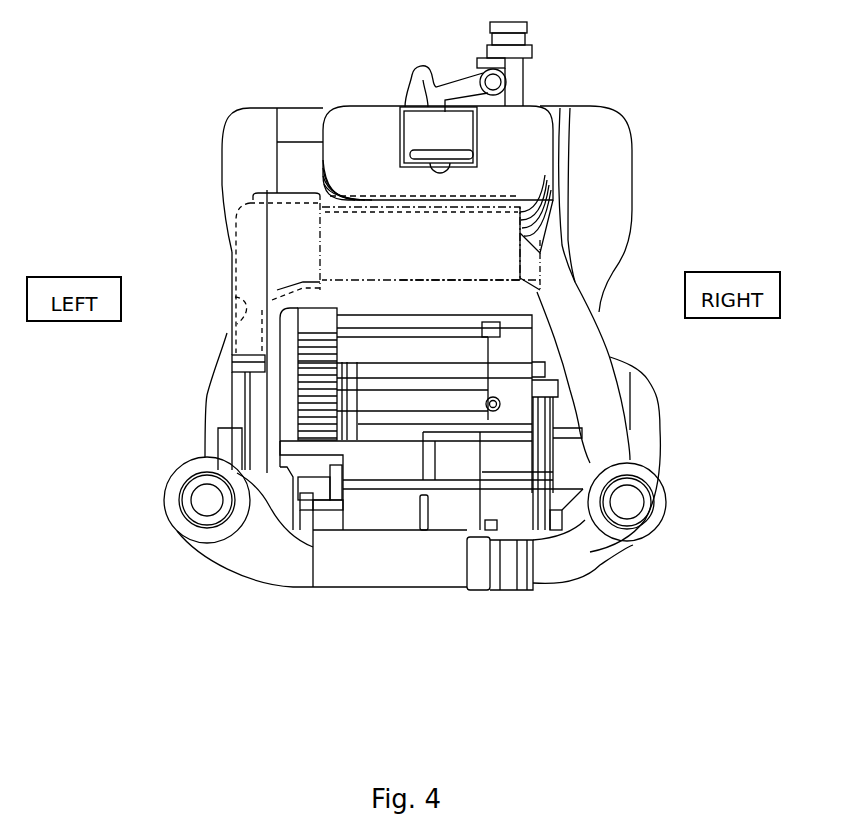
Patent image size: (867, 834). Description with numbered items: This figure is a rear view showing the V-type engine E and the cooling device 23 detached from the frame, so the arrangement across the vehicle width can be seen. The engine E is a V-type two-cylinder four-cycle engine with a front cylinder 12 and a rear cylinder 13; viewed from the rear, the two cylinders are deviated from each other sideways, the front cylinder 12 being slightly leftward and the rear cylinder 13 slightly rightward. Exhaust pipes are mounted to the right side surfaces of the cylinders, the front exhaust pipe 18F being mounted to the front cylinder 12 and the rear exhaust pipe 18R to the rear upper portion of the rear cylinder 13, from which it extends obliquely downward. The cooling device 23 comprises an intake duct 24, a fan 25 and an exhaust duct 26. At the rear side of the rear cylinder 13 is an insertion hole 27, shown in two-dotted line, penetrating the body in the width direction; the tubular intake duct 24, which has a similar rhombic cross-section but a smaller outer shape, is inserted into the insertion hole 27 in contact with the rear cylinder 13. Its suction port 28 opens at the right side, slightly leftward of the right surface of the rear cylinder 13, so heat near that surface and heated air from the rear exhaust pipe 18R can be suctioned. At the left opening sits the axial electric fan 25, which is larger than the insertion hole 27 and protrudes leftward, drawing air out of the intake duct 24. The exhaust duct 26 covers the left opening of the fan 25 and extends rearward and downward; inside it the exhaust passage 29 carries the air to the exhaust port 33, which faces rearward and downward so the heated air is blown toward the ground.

The front cylinder 12 is at (300, 123).
The rear cylinder 13 is at (357, 130).
The engine E is at (556, 116).
The cooling device 23 is at (303, 193).
The exhaust duct 26 is at (250, 274).
The exhaust passage 29 is at (224, 318).
The exhaust port 33 is at (243, 365).
The suction port 28 is at (542, 252).
The insertion hole 27 is at (540, 286).
The fan 25 is at (303, 272).
The intake duct 24 is at (440, 268).
The rear exhaust pipe 18R is at (585, 334).
The front exhaust pipe 18F is at (666, 505).